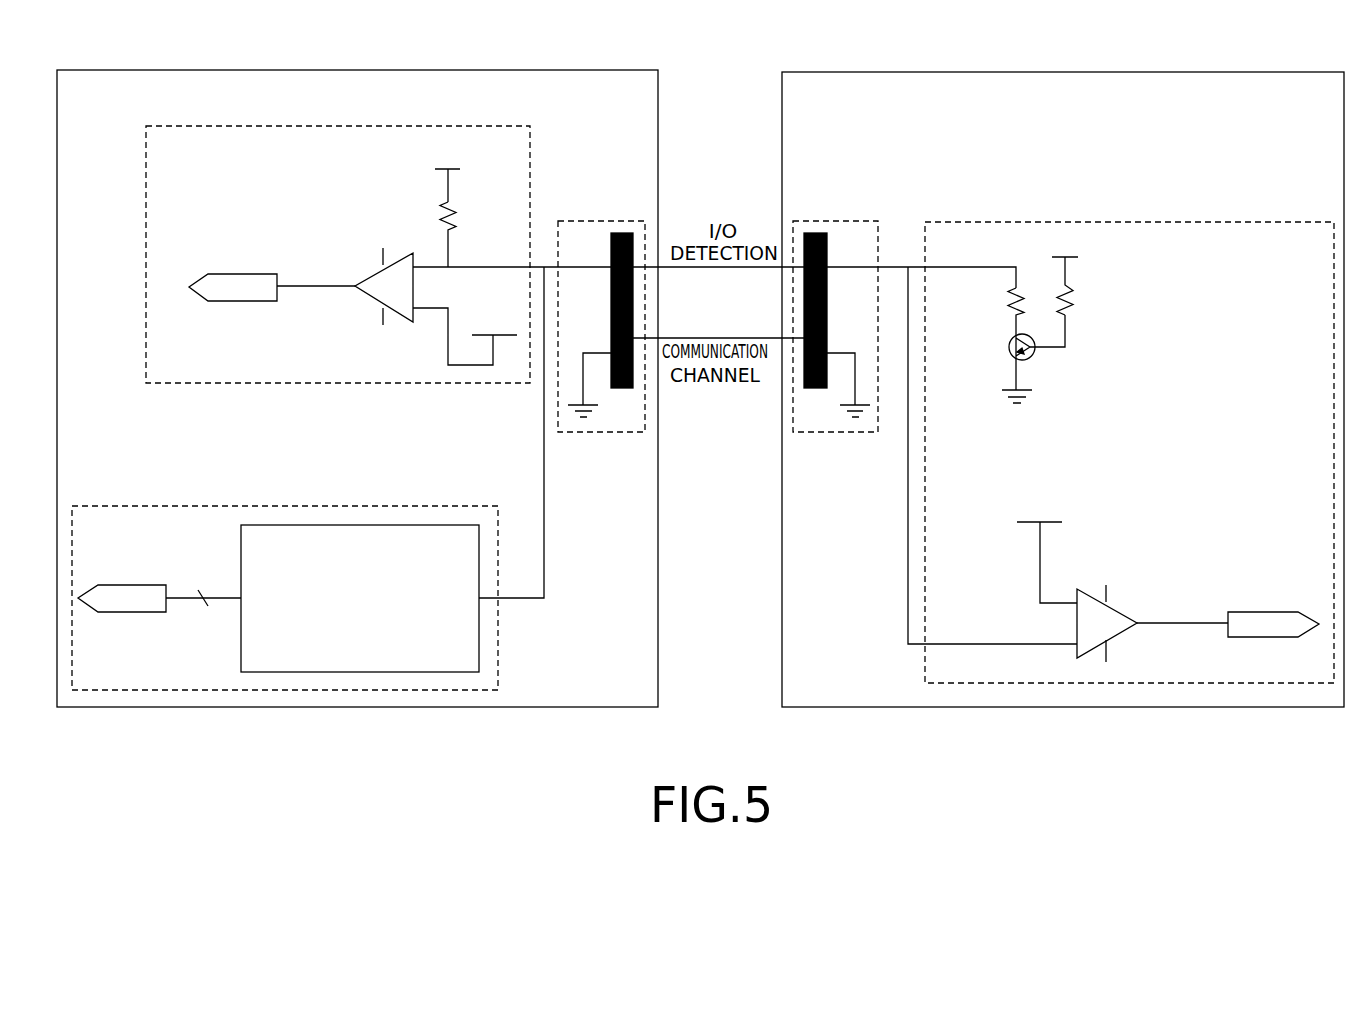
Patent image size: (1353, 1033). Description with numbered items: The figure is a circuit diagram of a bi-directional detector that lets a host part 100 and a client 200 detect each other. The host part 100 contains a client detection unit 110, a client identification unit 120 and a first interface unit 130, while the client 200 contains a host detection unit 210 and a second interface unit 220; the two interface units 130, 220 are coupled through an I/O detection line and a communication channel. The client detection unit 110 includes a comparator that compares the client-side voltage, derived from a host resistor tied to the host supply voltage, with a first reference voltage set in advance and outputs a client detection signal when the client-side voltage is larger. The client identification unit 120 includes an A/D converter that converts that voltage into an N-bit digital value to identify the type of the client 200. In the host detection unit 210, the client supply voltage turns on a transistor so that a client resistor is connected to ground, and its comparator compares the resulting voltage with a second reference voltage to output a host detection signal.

The host part 100 is at (354, 70).
The client detection unit 110 is at (336, 125).
The client identification unit 120 is at (266, 506).
The first interface unit 130 is at (600, 220).
The client 200 is at (1057, 72).
The host detection unit 210 is at (1125, 222).
The second interface unit 220 is at (836, 220).